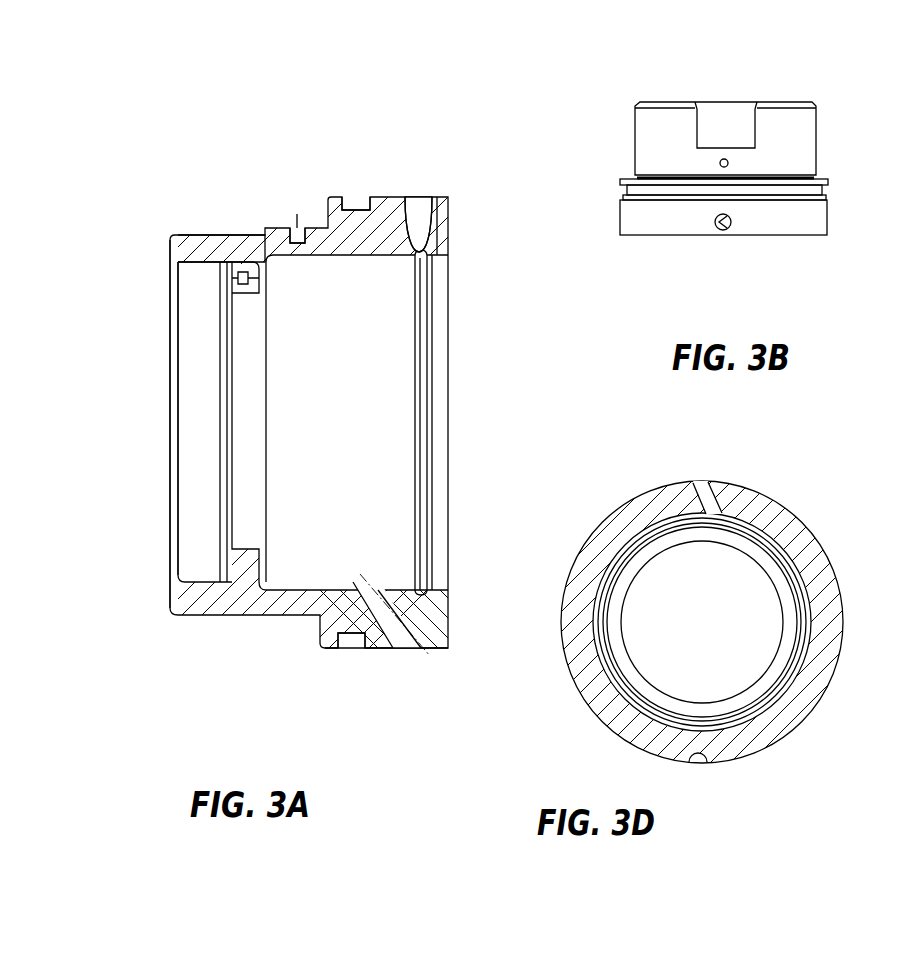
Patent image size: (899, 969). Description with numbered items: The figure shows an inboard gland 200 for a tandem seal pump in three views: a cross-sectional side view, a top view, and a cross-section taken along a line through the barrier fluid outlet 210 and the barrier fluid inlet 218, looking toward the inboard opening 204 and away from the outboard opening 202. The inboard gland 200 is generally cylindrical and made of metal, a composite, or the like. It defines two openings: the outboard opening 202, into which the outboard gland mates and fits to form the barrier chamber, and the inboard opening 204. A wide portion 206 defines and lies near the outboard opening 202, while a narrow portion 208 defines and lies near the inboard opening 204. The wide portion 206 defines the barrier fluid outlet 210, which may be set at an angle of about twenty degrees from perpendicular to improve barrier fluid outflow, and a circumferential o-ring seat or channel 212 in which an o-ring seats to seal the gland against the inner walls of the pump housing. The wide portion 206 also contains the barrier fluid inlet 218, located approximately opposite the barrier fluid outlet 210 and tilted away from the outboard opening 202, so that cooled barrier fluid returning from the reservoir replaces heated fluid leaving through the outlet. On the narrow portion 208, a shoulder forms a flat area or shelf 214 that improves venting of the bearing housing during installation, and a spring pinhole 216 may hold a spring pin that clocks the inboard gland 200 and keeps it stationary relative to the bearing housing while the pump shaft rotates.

In FIG. 3A, the inboard gland 200 is at (463, 52).
In FIG. 3B, the inboard gland 200 is at (595, 186).
In FIG. 3D, the inboard gland 200 is at (612, 478).
In FIG. 3A, the outboard opening 202 is at (300, 418).
In FIG. 3B, the outboard opening 202 is at (746, 252).
In FIG. 3A, the inboard opening 204 is at (151, 476).
In FIG. 3B, the inboard opening 204 is at (737, 105).
In FIG. 3A, the wide portion 206 is at (378, 654).
In FIG. 3B, the wide portion 206 is at (828, 215).
In FIG. 3A, the narrow portion 208 is at (256, 226).
In FIG. 3B, the narrow portion 208 is at (635, 135).
In FIG. 3A, the barrier fluid outlet 210 is at (427, 197).
In FIG. 3B, the barrier fluid outlet 210 is at (722, 229).
In FIG. 3D, the barrier fluid outlet 210 is at (707, 482).
In FIG. 3A, the o-ring seat or channel 212 is at (355, 200).
In FIG. 3B, the o-ring seat or channel 212 is at (828, 190).
In FIG. 3A, the flat area or shelf 214 is at (188, 234).
In FIG. 3B, the flat area or shelf 214 is at (737, 118).
In FIG. 3A, the spring pinhole 216 is at (297, 228).
In FIG. 3B, the spring pinhole 216 is at (728, 163).
In FIG. 3A, the barrier fluid inlet 218 is at (404, 652).
In FIG. 3D, the barrier fluid inlet 218 is at (704, 755).